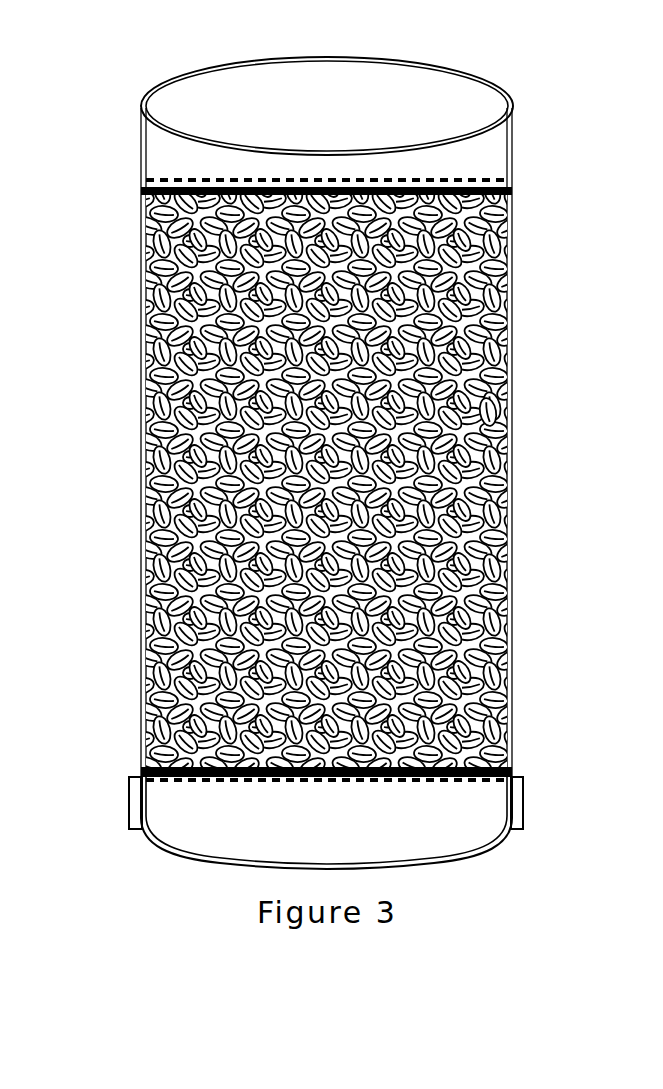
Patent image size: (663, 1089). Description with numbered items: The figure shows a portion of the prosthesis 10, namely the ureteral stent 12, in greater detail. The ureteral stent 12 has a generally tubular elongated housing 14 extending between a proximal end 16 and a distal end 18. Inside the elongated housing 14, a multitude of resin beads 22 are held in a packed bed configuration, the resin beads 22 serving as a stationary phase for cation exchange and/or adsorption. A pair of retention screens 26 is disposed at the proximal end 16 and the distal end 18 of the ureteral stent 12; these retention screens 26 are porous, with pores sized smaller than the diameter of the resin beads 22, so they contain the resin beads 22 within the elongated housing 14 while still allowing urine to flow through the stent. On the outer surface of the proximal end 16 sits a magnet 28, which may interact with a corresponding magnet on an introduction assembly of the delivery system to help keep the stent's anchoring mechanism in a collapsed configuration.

The prosthesis 10 is at (52, 210).
The ureteral stent 12 is at (148, 402).
The elongated housing 14 is at (141, 488).
The proximal end 16 is at (175, 848).
The distal end 18 is at (141, 108).
The resin beads 22 is at (500, 412).
The retention screens 26 is at (485, 180).
The magnet 28 is at (518, 808).